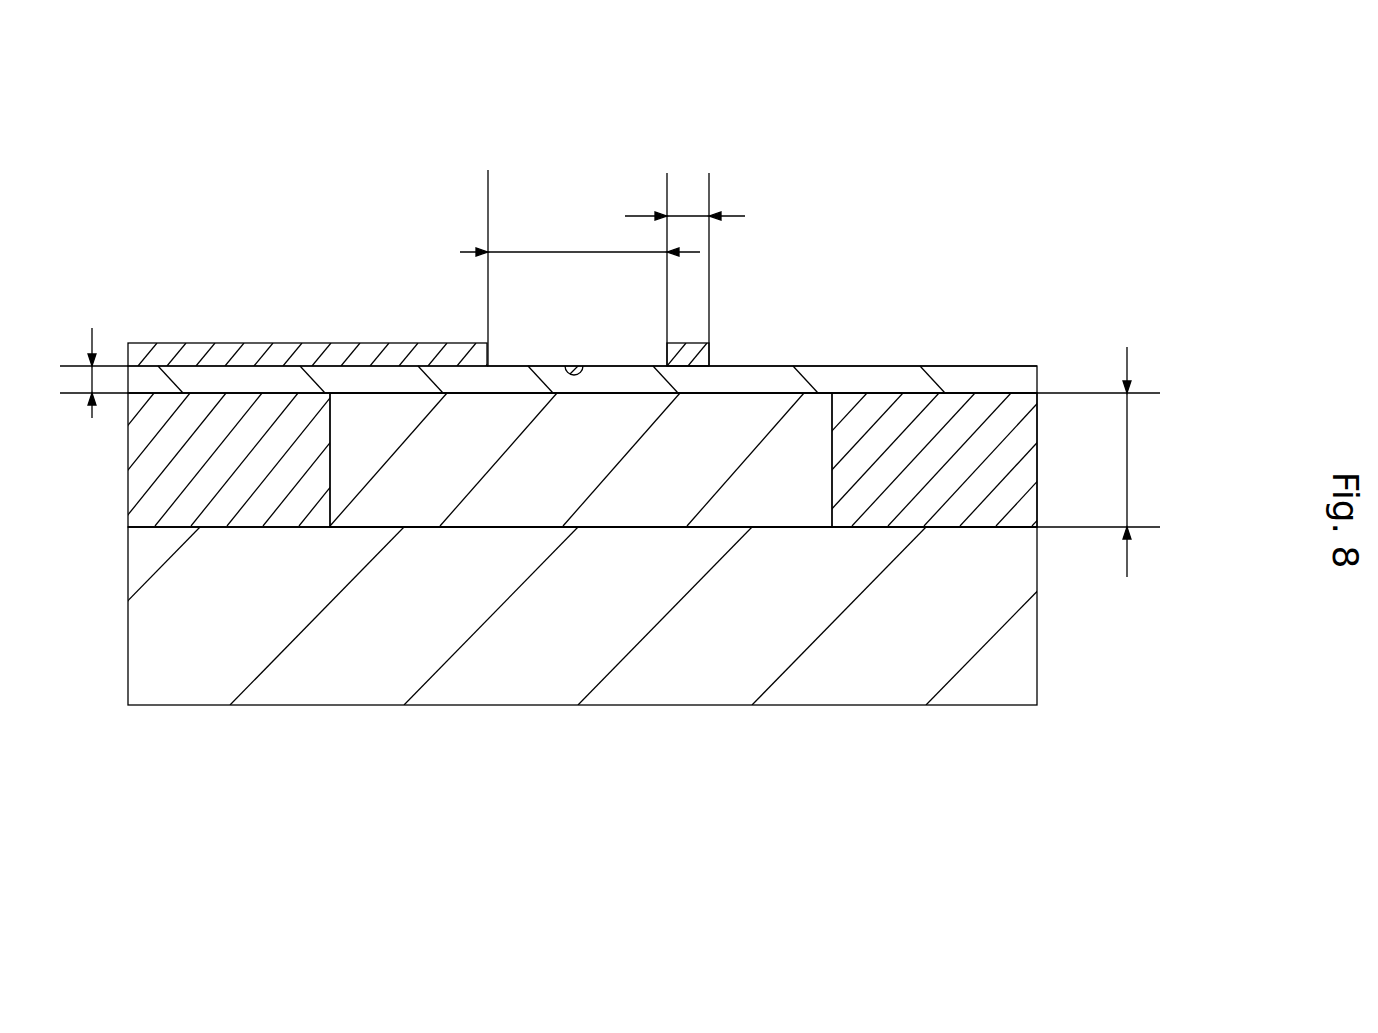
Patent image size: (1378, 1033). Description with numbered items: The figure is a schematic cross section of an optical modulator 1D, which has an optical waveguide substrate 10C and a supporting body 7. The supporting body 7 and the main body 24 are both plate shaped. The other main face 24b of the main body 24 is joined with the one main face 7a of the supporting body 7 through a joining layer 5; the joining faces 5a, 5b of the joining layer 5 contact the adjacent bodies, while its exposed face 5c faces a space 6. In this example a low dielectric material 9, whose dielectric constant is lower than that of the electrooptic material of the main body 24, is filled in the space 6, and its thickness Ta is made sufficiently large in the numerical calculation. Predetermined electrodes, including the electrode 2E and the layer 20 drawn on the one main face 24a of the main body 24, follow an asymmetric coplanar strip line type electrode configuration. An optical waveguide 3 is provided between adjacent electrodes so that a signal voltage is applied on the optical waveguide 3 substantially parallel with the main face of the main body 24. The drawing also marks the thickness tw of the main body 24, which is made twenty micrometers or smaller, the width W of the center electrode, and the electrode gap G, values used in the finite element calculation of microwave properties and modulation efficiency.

The optical waveguide 3 is at (577, 363).
The joining layer 5 is at (1028, 503).
The joining face 5a is at (952, 528).
The joining face 5b is at (957, 393).
The exposed face 5c is at (828, 493).
The space 6 is at (537, 513).
The supporting body 7 is at (1045, 598).
The one main face of the supporting body 7a is at (879, 516).
The low dielectric material 9 is at (357, 410).
The upper magnetic layer 20 is at (398, 352).
The main body 24 is at (1022, 357).
The one main face of the main body 24a is at (765, 366).
The other main face of the main body 24b is at (647, 395).
The electrode 2E is at (682, 342).
The optical waveguide substrate 10C is at (908, 345).
The optical modulator 1D is at (1068, 367).
The thickness of the main body tw is at (91, 400).
The electrode gap G is at (555, 250).
The width of the center electrode W is at (685, 214).
The thickness of the low dielectric material Ta is at (1145, 462).